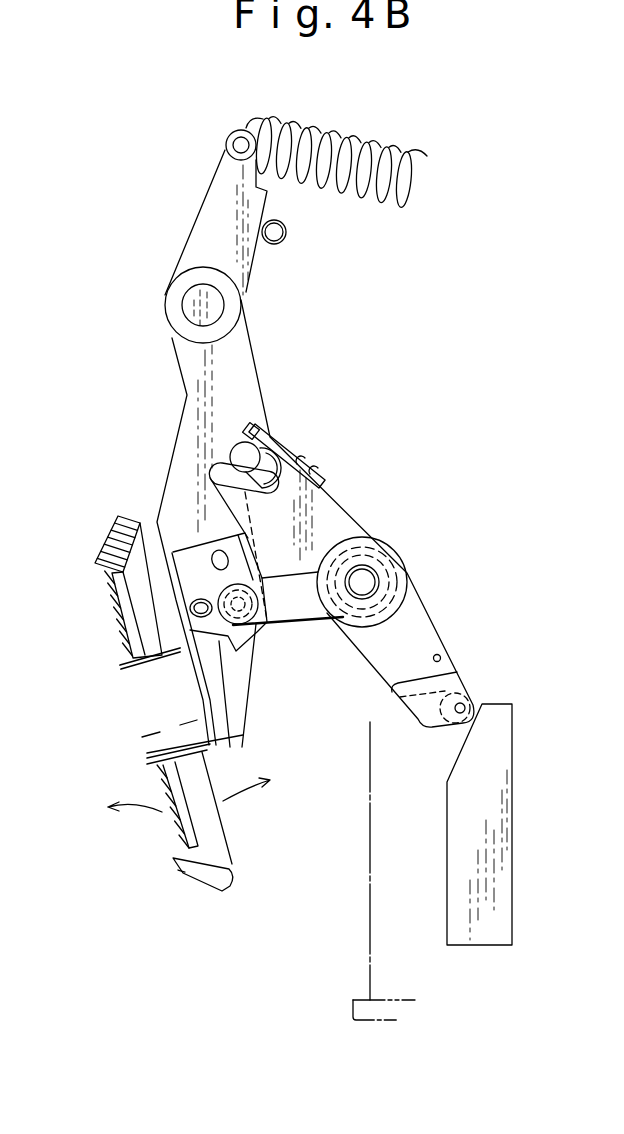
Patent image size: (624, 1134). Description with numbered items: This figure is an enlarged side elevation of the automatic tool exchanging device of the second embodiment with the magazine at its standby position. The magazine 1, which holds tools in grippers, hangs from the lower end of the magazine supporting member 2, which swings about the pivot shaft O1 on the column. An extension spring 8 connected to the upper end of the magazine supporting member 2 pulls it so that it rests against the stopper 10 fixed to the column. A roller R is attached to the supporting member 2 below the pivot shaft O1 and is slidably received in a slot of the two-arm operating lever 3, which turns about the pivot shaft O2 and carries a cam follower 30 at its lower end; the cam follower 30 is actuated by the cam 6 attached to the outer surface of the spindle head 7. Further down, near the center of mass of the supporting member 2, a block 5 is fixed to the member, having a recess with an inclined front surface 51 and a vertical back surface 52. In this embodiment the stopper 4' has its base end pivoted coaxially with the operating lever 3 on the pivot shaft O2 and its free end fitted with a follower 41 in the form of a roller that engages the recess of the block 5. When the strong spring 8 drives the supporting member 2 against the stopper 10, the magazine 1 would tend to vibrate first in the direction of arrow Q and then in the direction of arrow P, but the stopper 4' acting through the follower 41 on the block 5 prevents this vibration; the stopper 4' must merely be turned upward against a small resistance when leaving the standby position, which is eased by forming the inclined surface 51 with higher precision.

The magazine 1 is at (183, 835).
The magazine supporting member 2 is at (172, 475).
The operating lever 3 is at (335, 503).
The stopper 4' is at (288, 621).
The block 5 is at (240, 645).
The cam 6 is at (500, 790).
The spindle head 7 is at (375, 851).
The extension spring 8 is at (363, 138).
The stopper 10 is at (287, 233).
The cam follower 30 is at (476, 697).
The follower 41 is at (258, 630).
The inclined front surface 51 is at (113, 547).
The vertical back surface 52 is at (205, 535).
The pivot shaft O1 is at (220, 303).
The pivot shaft O2 is at (367, 577).
The roller R is at (248, 447).
The arrow P is at (246, 782).
The arrow Q is at (135, 799).